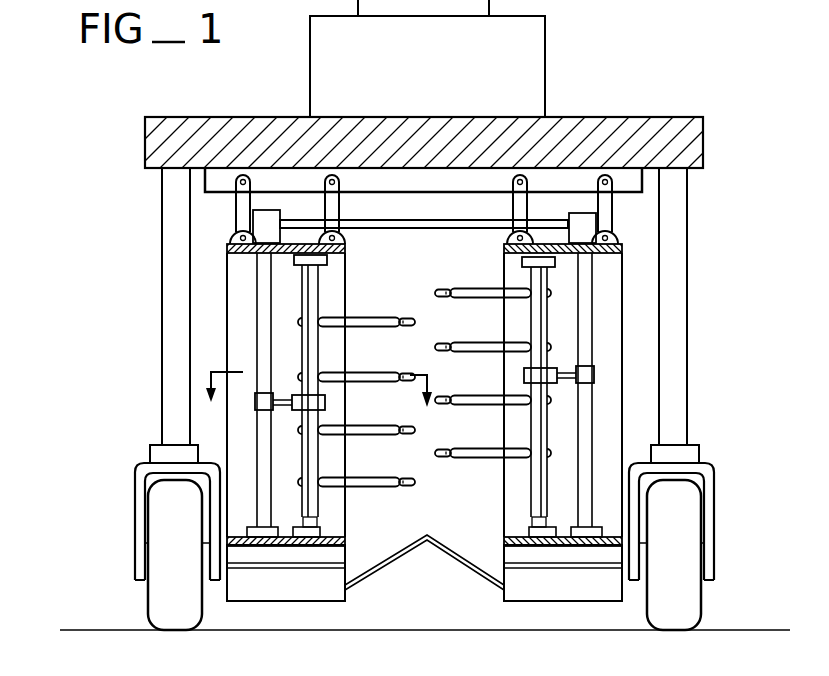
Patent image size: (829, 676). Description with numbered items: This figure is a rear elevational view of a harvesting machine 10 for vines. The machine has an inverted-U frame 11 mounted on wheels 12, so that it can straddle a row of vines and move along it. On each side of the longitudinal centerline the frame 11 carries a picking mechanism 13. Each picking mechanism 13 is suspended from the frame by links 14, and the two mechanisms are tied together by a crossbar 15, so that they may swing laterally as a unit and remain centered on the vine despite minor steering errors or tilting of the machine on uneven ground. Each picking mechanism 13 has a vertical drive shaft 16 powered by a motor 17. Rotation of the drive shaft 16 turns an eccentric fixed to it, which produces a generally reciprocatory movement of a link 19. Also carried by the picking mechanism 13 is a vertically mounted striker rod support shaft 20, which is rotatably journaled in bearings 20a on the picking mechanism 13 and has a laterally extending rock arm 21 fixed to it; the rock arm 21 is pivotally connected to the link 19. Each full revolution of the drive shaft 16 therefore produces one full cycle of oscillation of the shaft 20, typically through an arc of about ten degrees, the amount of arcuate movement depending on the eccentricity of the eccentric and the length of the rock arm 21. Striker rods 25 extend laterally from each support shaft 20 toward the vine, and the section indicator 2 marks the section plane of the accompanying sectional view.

The harvesting machine 10 is at (672, 68).
The inverted-U frame 11 is at (593, 118).
The wheels 12 is at (165, 608).
The picking mechanism 13 is at (356, 287).
The links 14 is at (325, 204).
The crossbar 15 is at (418, 222).
The vertical drive shaft 16 is at (262, 338).
The motor 17 is at (258, 225).
The link 19 is at (256, 396).
The striker rod support shaft 20 is at (318, 347).
The bearings 20a is at (330, 260).
The rock arm 21 is at (280, 413).
The pins 25 is at (370, 318).
The section line 2- 2 is at (323, 407).